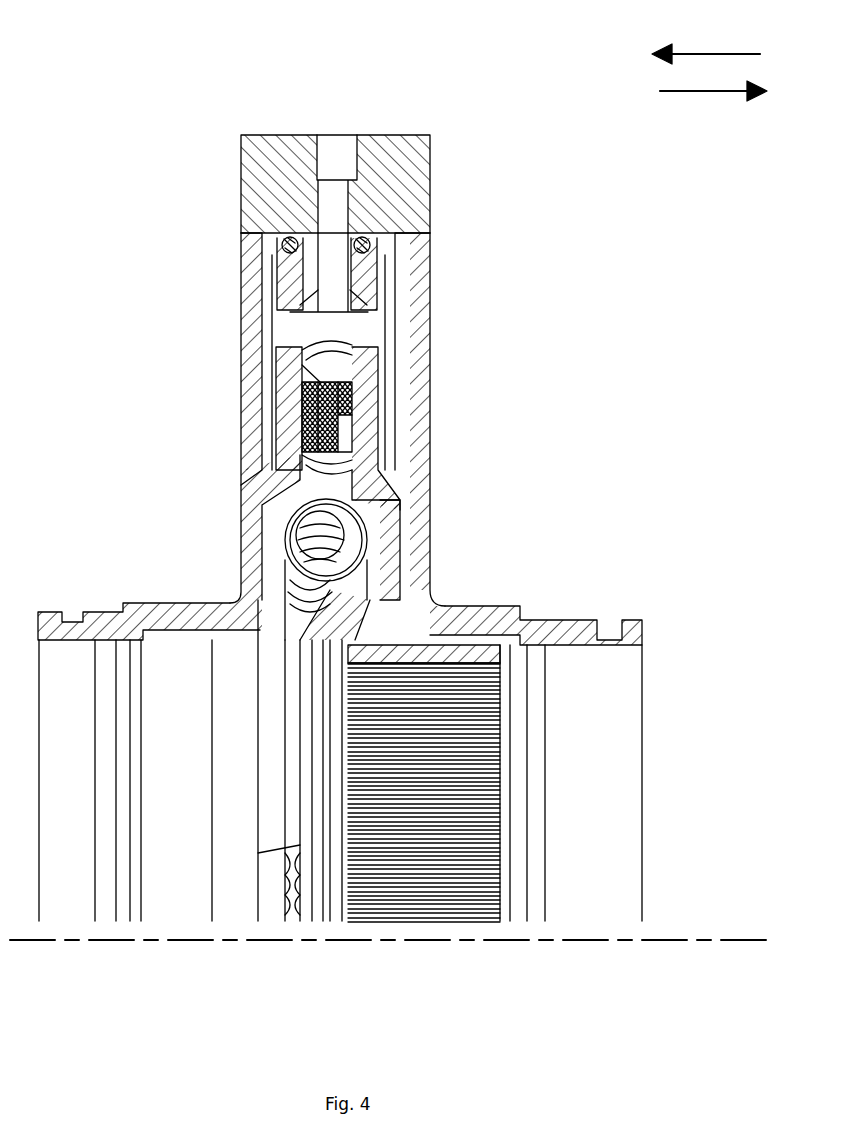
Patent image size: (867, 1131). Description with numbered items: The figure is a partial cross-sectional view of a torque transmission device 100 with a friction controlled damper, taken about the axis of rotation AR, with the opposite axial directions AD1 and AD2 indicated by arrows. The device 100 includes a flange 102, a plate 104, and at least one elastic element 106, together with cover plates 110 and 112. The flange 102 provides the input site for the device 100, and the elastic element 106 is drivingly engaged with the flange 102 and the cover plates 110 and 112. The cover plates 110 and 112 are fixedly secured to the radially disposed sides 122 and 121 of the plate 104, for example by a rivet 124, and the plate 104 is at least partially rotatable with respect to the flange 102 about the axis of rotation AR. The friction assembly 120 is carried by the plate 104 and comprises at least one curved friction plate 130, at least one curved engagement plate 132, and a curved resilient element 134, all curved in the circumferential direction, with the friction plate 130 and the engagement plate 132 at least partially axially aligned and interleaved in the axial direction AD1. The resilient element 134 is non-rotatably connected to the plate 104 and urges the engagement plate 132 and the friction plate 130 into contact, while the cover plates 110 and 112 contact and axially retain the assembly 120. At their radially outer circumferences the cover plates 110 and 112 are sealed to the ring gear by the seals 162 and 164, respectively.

The torque transmission device 100 is at (494, 46).
The flange 102 is at (498, 653).
The plate 104 is at (268, 130).
The elastic element 106 is at (296, 530).
The cover plate 110 is at (560, 612).
The cover plate 112 is at (110, 612).
The friction assembly 120 is at (290, 403).
The radially disposed side 121 is at (314, 270).
The radially disposed side 122 is at (345, 255).
The rivet 124 is at (285, 325).
The curved friction plate 130 is at (340, 372).
The curved engagement plate 132 is at (330, 360).
The curved resilient element 134 is at (378, 393).
The seal 162 is at (284, 236).
The seal 164 is at (364, 237).
The axial direction AD1 is at (694, 91).
The axial direction AD2 is at (702, 54).
The axis of rotation AR is at (670, 940).